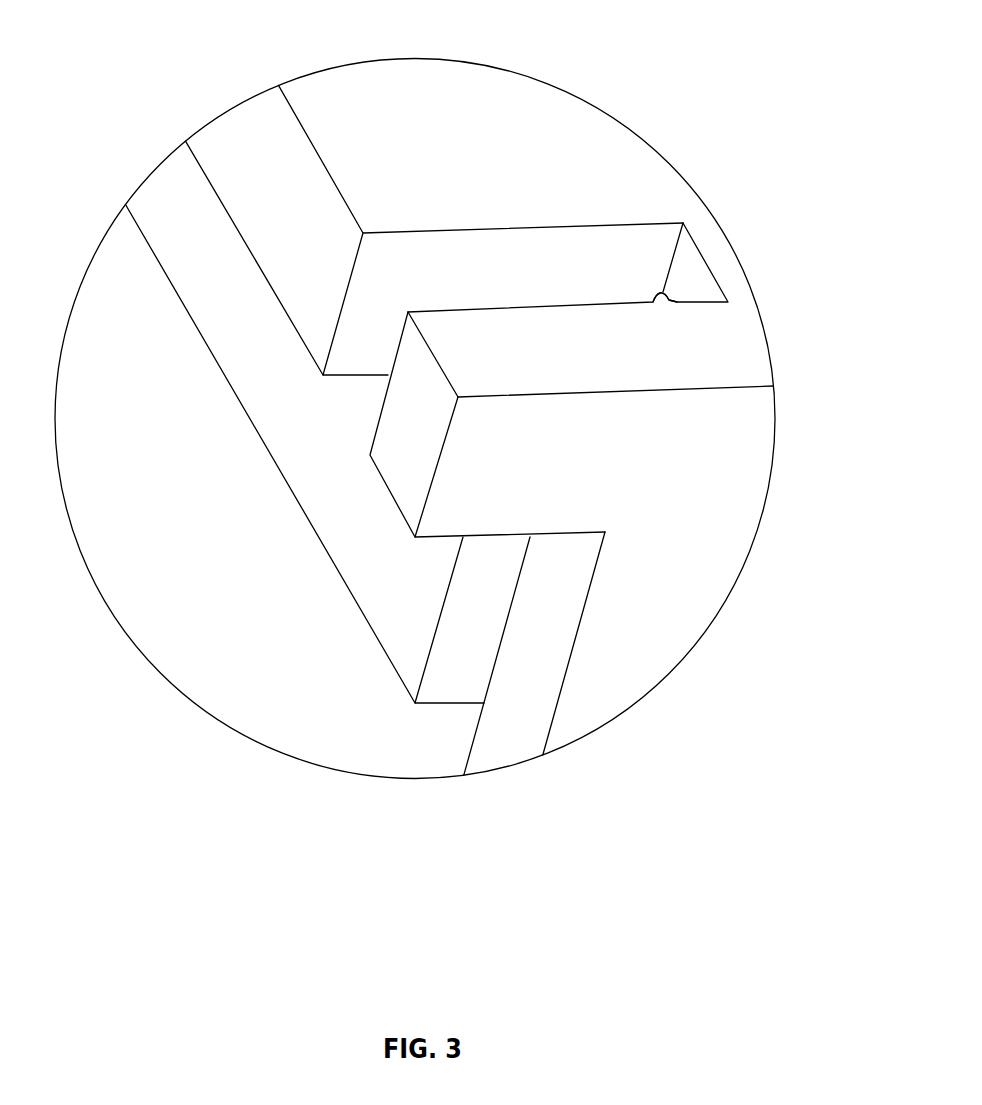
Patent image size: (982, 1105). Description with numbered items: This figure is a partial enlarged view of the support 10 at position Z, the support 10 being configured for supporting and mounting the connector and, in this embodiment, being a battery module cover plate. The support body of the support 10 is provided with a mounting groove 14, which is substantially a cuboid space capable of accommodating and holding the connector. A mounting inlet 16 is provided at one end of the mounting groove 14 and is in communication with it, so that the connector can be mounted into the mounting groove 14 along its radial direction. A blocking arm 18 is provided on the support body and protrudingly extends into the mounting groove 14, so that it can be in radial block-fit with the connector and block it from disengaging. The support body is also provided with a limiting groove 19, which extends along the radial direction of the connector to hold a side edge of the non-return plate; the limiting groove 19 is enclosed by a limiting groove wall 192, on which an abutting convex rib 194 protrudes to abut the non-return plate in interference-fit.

The support 10 is at (413, 38).
The mounting groove 14 is at (158, 323).
The mounting inlet 16 is at (523, 712).
The blocking arm 18 is at (267, 198).
The limiting groove 19 is at (558, 275).
The limiting groove wall 192 is at (465, 283).
The abutting convex rib 194 is at (663, 292).
The position Z is at (405, 778).